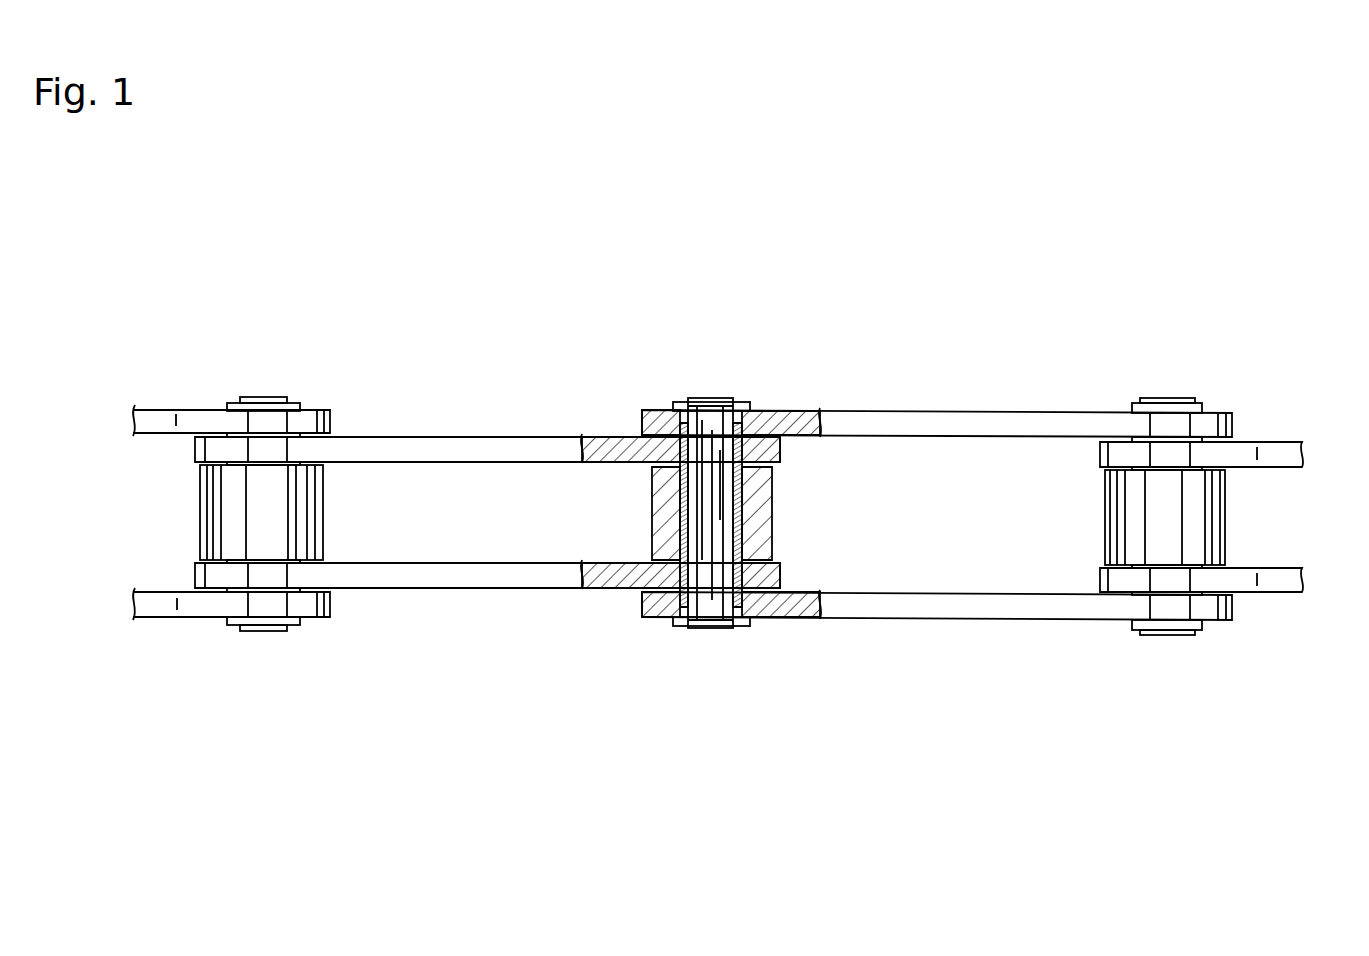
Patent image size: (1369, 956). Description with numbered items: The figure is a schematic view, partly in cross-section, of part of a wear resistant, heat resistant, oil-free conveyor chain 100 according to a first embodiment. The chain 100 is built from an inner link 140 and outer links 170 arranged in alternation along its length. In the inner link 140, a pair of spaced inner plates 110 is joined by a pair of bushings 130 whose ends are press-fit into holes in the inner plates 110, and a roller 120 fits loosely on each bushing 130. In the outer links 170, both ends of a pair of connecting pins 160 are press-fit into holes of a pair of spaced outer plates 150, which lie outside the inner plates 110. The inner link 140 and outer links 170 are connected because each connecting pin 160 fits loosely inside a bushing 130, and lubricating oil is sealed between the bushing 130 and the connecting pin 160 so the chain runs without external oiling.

The oil-free conveyor chain 100 is at (578, 339).
The inner plate 110 is at (195, 452).
The roller 120 is at (205, 512).
The bushing 130 is at (740, 495).
The inner link 140 is at (882, 447).
The outer plate 150 is at (190, 408).
The connecting pin 160 is at (272, 398).
The outer link 170 is at (1208, 333).